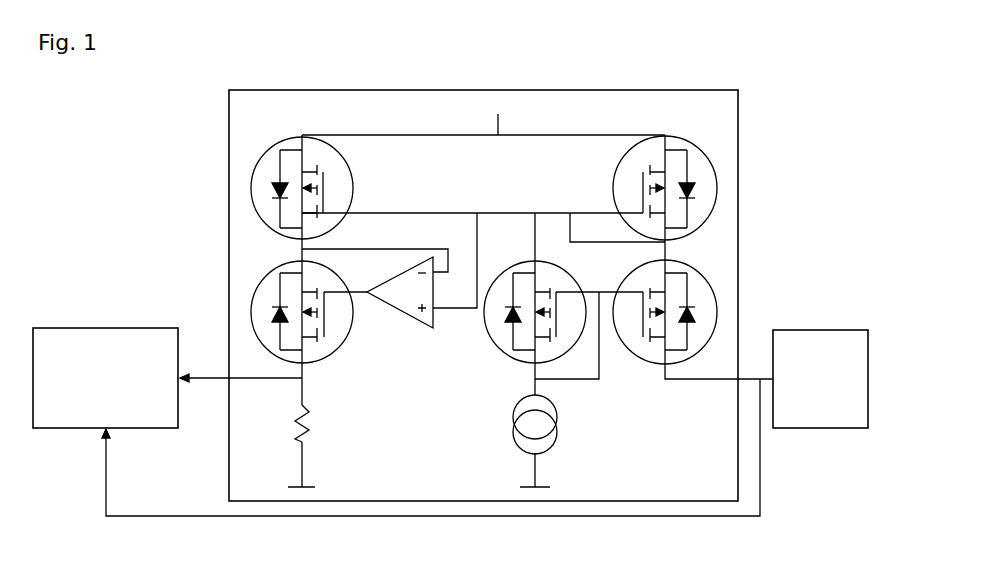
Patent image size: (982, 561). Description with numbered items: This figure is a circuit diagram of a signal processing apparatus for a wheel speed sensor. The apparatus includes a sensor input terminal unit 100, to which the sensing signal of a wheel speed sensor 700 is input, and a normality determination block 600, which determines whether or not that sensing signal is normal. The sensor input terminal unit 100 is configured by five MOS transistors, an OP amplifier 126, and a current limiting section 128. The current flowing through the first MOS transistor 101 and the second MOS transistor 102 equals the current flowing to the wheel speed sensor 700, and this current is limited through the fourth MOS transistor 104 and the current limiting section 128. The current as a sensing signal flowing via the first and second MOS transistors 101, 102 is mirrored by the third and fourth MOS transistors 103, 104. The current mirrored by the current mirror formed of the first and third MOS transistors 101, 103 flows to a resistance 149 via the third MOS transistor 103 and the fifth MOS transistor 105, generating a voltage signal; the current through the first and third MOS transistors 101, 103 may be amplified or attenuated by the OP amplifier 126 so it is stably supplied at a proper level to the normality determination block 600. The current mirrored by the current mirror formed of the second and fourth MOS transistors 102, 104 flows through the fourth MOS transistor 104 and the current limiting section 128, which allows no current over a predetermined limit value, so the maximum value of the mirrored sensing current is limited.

The sensor input terminal unit 100 is at (738, 163).
The first MOS transistor 101 is at (712, 213).
The second MOS transistor 102 is at (717, 307).
The third MOS transistor 103 is at (253, 175).
The fourth MOS transistor 104 is at (498, 353).
The fifth MOS transistor 105 is at (253, 275).
The OP amplifier 126 is at (402, 315).
The current limiting section 128 is at (557, 438).
The resistance 149 is at (310, 430).
The normality determination block 600 is at (120, 327).
The wheel speed sensor 700 is at (797, 428).